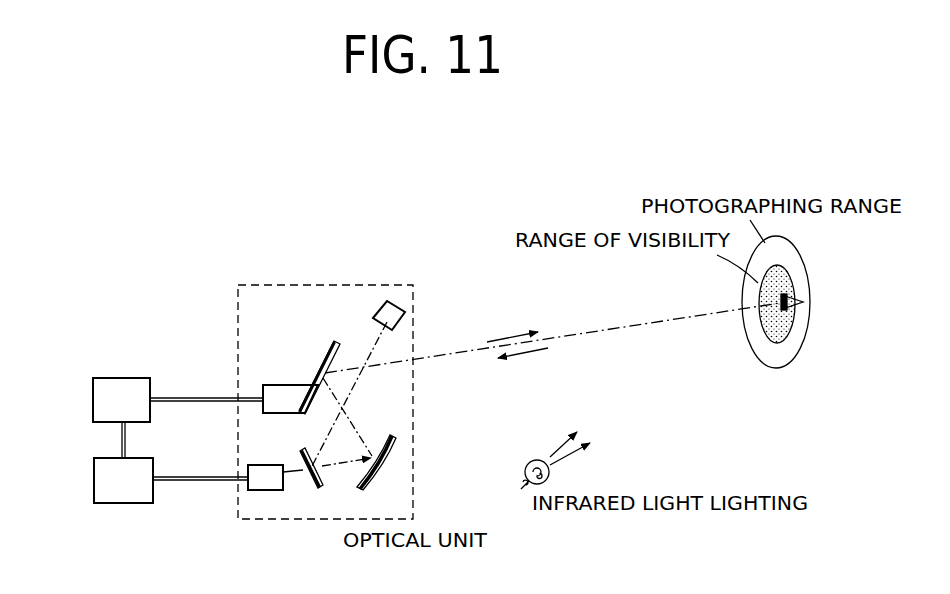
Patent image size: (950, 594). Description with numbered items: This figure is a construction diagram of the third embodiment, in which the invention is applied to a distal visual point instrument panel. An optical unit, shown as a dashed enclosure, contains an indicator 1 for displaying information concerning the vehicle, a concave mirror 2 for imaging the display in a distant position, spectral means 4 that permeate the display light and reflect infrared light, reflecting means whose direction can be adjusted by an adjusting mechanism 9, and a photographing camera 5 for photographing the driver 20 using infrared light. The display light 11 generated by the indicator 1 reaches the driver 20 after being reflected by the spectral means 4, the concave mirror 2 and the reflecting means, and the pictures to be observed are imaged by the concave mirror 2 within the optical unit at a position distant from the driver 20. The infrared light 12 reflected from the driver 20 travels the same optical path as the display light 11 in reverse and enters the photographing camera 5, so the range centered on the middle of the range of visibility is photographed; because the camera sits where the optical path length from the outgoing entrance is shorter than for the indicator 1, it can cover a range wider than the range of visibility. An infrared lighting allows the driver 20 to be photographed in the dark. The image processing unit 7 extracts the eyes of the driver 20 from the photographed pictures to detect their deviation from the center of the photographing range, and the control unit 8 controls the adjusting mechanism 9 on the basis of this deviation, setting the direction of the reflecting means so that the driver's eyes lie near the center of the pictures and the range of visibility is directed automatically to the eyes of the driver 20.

The indicator 1 is at (387, 301).
The concave mirror 2 is at (433, 457).
The spectral means 4 is at (379, 405).
The photographing camera 5 is at (249, 455).
The image processing unit 7 is at (133, 505).
The control unit 8 is at (153, 395).
The adjusting mechanism 9 is at (238, 376).
The display light 11 is at (552, 336).
The infrared light 12 is at (541, 366).
The driver 20 is at (787, 318).